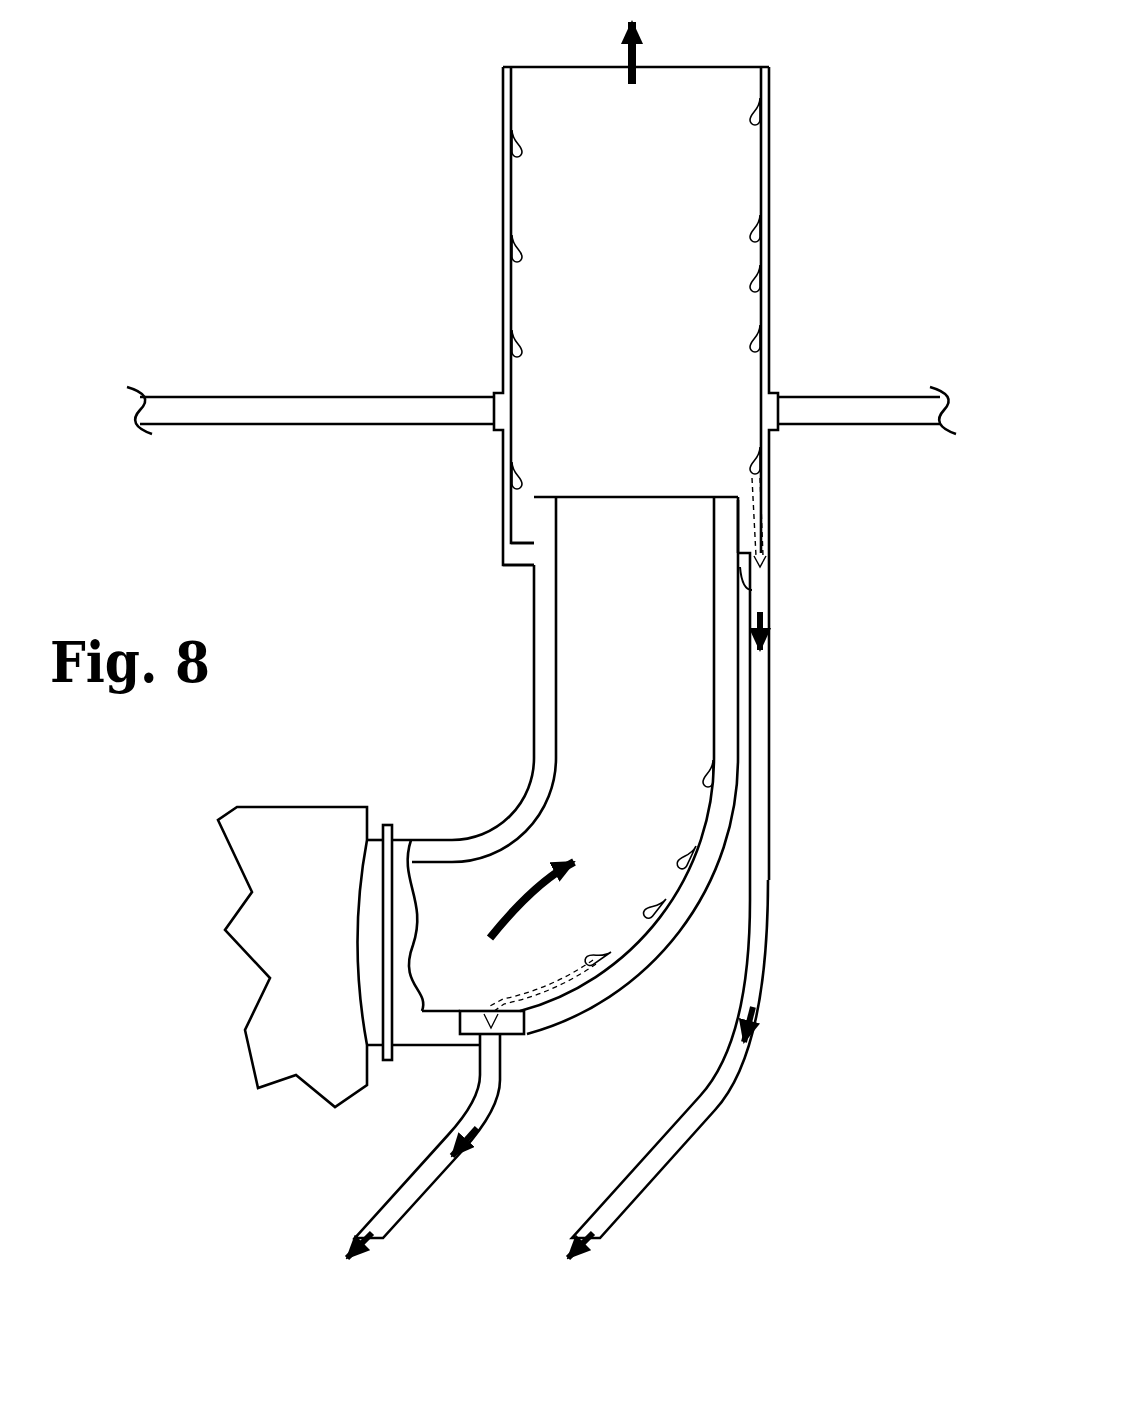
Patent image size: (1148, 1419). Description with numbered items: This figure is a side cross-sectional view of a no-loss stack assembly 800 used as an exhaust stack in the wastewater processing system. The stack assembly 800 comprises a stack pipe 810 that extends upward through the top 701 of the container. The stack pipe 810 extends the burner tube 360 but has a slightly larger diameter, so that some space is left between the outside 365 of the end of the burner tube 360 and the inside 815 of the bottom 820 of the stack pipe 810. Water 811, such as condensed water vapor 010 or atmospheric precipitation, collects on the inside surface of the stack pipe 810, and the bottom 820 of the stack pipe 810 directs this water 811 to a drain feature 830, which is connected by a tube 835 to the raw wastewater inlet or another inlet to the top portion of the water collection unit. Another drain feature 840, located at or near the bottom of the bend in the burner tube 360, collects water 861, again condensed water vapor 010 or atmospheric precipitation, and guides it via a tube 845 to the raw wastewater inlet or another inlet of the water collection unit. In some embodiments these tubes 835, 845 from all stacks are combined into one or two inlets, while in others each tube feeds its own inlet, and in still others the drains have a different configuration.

The no-loss stack assembly 800 is at (226, 150).
The stack pipe 810 is at (508, 206).
The water 811 is at (518, 262).
The top of container 701 is at (862, 397).
The inside of the bottom of stack pipe 815 is at (511, 522).
The bottom of stack pipe 820 is at (522, 565).
The outside of the end of burner tube 365 is at (740, 521).
The drain feature 830 is at (781, 551).
The burner tube 360 is at (455, 754).
The water 861 is at (686, 866).
The water vapor 010 is at (640, 33).
The drain feature 840 is at (452, 1036).
The tube 845 is at (450, 1175).
The tube 835 is at (660, 1175).